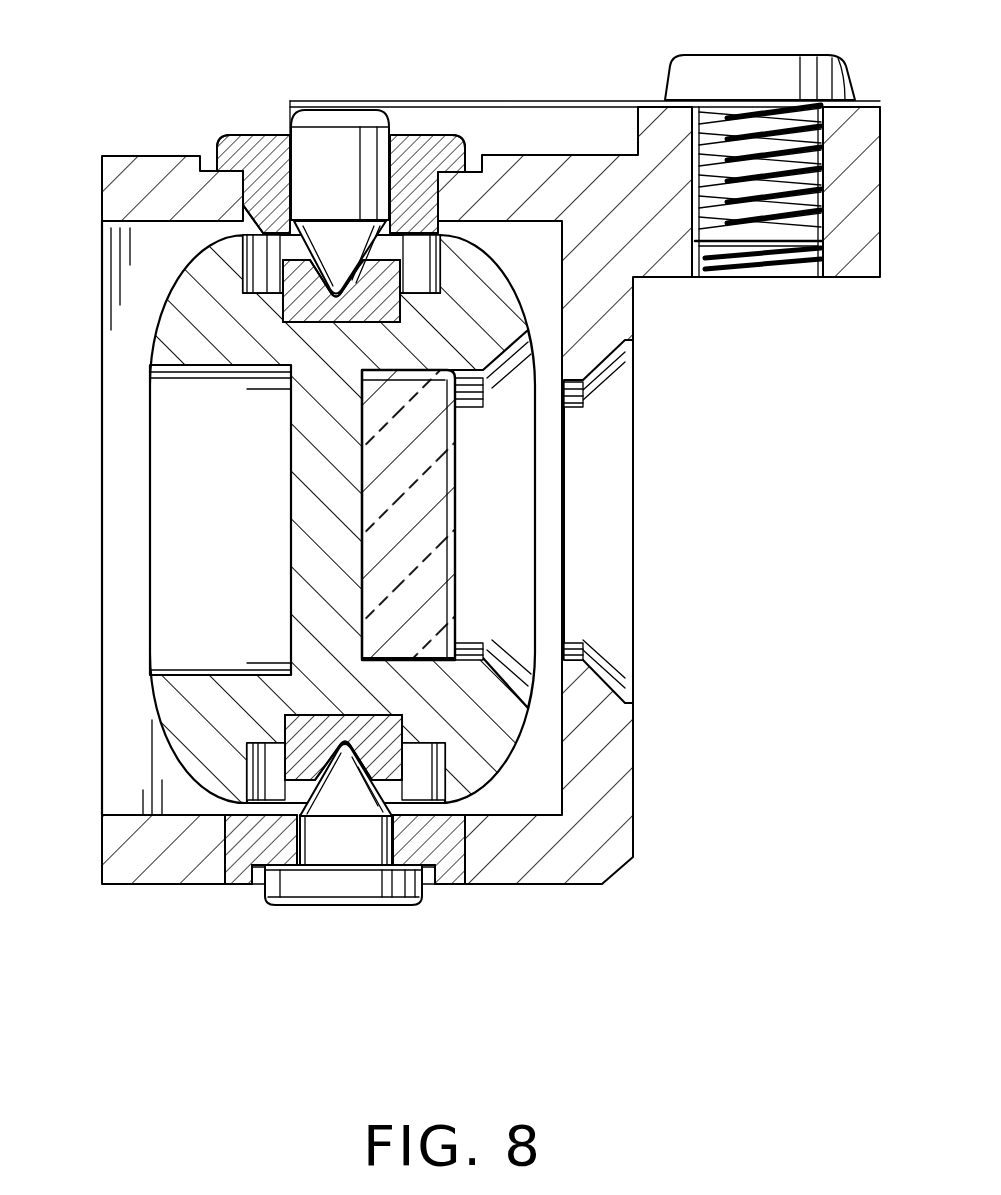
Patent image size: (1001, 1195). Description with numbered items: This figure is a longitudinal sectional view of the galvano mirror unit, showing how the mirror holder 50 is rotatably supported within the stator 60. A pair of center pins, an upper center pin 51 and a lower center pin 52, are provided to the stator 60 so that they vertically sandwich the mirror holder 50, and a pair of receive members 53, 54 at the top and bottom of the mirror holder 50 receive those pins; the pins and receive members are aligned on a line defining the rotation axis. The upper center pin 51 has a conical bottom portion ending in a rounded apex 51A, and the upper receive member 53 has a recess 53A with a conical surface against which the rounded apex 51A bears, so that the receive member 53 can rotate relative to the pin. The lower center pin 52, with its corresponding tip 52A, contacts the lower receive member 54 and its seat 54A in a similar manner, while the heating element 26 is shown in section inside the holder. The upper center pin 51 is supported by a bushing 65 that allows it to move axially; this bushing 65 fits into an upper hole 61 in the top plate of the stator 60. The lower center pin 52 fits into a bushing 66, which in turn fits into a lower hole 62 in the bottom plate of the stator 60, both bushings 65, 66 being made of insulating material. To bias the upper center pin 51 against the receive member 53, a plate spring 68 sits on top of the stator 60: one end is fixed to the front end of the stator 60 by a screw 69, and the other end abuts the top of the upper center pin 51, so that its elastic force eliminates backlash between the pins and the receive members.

The heating element / cartridge 26 is at (420, 591).
The mirror holder 50 is at (490, 733).
The upper center pin 51 is at (282, 246).
The rounded apex 51A is at (287, 303).
The lower center pin 52 is at (299, 787).
The tip of lower electrode 52A is at (312, 740).
The receive member 53 is at (322, 294).
The recess 53A is at (516, 270).
The receive member 54 is at (300, 763).
The lower insulating sleeve 54A is at (413, 788).
The stator 60 is at (585, 326).
The upper hole 61 is at (252, 195).
The lower hole 62 is at (222, 847).
The bushing 65 is at (430, 152).
The bushing 66 is at (432, 837).
The plate spring 68 is at (552, 98).
The screw 69 is at (768, 80).